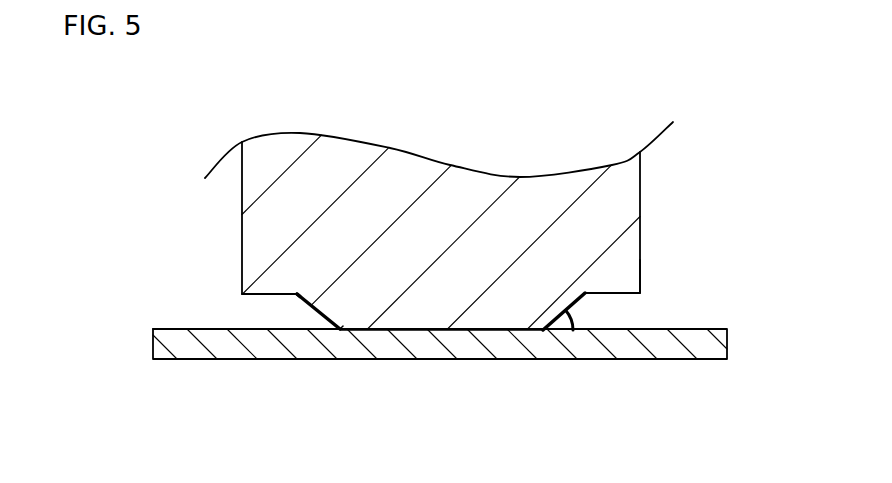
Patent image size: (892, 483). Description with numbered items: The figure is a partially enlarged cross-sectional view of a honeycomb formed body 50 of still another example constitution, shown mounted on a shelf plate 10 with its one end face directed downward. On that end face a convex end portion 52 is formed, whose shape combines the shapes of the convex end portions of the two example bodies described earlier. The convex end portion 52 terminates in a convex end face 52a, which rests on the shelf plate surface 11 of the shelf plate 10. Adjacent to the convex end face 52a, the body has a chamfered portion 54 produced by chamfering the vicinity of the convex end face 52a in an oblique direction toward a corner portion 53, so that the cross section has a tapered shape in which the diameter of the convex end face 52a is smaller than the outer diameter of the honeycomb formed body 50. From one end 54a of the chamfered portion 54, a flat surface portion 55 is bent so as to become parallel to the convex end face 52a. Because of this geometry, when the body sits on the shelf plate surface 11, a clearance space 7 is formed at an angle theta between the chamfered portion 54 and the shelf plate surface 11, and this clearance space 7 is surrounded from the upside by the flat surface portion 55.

The clearance space 7 is at (238, 318).
The shelf plate 10 is at (710, 344).
The shelf plate surface 11 is at (167, 329).
The honeycomb formed body 50 is at (712, 160).
The convex end portion 52 is at (370, 317).
The convex end face 52a is at (438, 330).
The corner portion 53 is at (643, 278).
The chamfered portion 54 is at (318, 316).
The one end of the chamfered portion 54a is at (288, 297).
The flat surface portion 55 is at (257, 295).